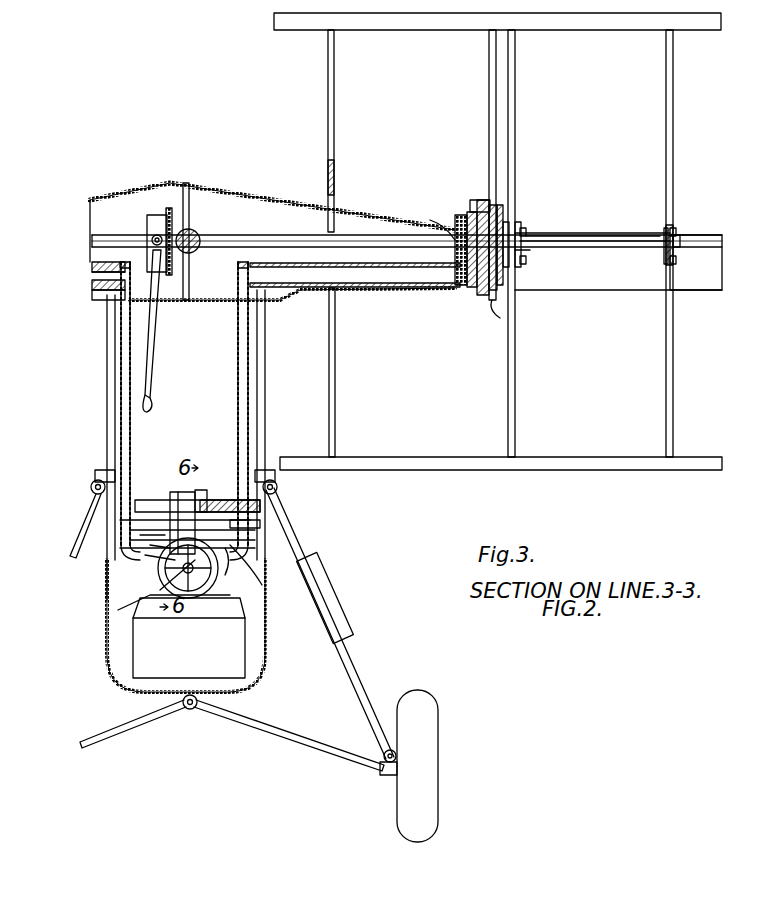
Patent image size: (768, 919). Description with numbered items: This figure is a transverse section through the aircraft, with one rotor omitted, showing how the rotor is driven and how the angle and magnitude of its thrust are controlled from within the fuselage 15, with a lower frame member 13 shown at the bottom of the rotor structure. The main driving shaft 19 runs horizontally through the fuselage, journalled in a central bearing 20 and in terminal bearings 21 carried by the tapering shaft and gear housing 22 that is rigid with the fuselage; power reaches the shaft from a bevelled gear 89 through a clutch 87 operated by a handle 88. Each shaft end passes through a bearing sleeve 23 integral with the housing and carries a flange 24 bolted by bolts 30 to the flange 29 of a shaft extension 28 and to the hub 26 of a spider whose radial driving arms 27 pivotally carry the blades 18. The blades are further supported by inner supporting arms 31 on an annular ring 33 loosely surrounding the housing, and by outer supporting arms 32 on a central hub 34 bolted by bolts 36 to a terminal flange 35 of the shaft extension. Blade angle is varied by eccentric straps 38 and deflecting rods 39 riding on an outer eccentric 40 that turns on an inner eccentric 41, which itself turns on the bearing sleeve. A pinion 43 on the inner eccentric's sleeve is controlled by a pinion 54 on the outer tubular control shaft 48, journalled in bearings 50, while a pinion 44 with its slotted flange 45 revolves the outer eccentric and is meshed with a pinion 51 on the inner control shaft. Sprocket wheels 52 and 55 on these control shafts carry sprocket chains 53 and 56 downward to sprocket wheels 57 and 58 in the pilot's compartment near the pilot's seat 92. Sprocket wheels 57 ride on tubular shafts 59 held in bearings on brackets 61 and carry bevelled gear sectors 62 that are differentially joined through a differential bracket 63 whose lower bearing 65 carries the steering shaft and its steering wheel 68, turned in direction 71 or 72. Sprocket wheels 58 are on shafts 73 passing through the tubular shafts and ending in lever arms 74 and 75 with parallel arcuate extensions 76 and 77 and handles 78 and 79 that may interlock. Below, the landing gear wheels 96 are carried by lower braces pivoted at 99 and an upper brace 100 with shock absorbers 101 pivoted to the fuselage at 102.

The lower frame bar 13 is at (450, 465).
The fuselage 15 is at (89, 496).
The blades 18 is at (585, 22).
The main driving shaft 19 is at (100, 240).
The central bearing 20 is at (196, 236).
The terminal bearings 21 is at (436, 219).
The shaft and gear housing 22 is at (100, 205).
The bearing sleeve 23 is at (612, 206).
The flanges 24 is at (502, 314).
The hub 26 is at (515, 284).
The radial driving arms 27 is at (515, 101).
The shaft extension 28 is at (575, 242).
The flange 29 is at (525, 248).
The bolts 30 is at (526, 232).
The supporting arms 31 is at (334, 95).
The outer supporting arms 32 is at (666, 100).
The annular hub or ring 33 is at (334, 172).
The central hub 34 is at (673, 230).
The terminal flange 35 is at (664, 238).
The bolts 36 is at (680, 240).
The eccentric strap 38 is at (497, 210).
The deflecting rod 39 is at (489, 105).
The outer eccentric 40 is at (506, 228).
The inner eccentric 41 is at (518, 228).
The pinion 43 is at (465, 270).
The pinion 44 is at (458, 280).
The flange 45 is at (472, 202).
The outer tubular control shaft 48 is at (92, 285).
The bearings 50 is at (95, 298).
The pinions 51 is at (480, 295).
The sprocket wheels 52 is at (125, 262).
The sprocket chains 53 is at (237, 362).
The pinions 54 is at (490, 290).
The sprocket wheels 55 is at (92, 265).
The sprocket chains 56 is at (107, 325).
The sprocket wheels 57 is at (150, 500).
The sprocket wheels 58 is at (98, 476).
The tubular shaft 59 is at (120, 520).
The brackets 61 is at (150, 545).
The bevelled gear sectors 62 is at (255, 540).
The differential bracket 63 is at (255, 530).
The bearing 65 is at (255, 548).
The steering wheel 68 is at (118, 610).
The direction 71 is at (155, 605).
The direction 72 is at (210, 583).
The shafts 73 is at (262, 515).
The lever arm 74 is at (201, 490).
The lever arm 75 is at (178, 488).
The arcuate extension 76 is at (140, 535).
The arcuate extension 77 is at (262, 590).
The handle 78 is at (160, 590).
The handle 79 is at (145, 555).
The clutch 87 is at (155, 215).
The handle 88 is at (148, 370).
The bevelled gear 89 is at (186, 185).
The pilot's seat 92 is at (192, 605).
The pneumatic-tired wheels 96 is at (405, 782).
The pivot 99 is at (190, 710).
The upper brace 100 is at (350, 648).
The shock absorbers 101 is at (330, 596).
The pivot 102 is at (92, 490).